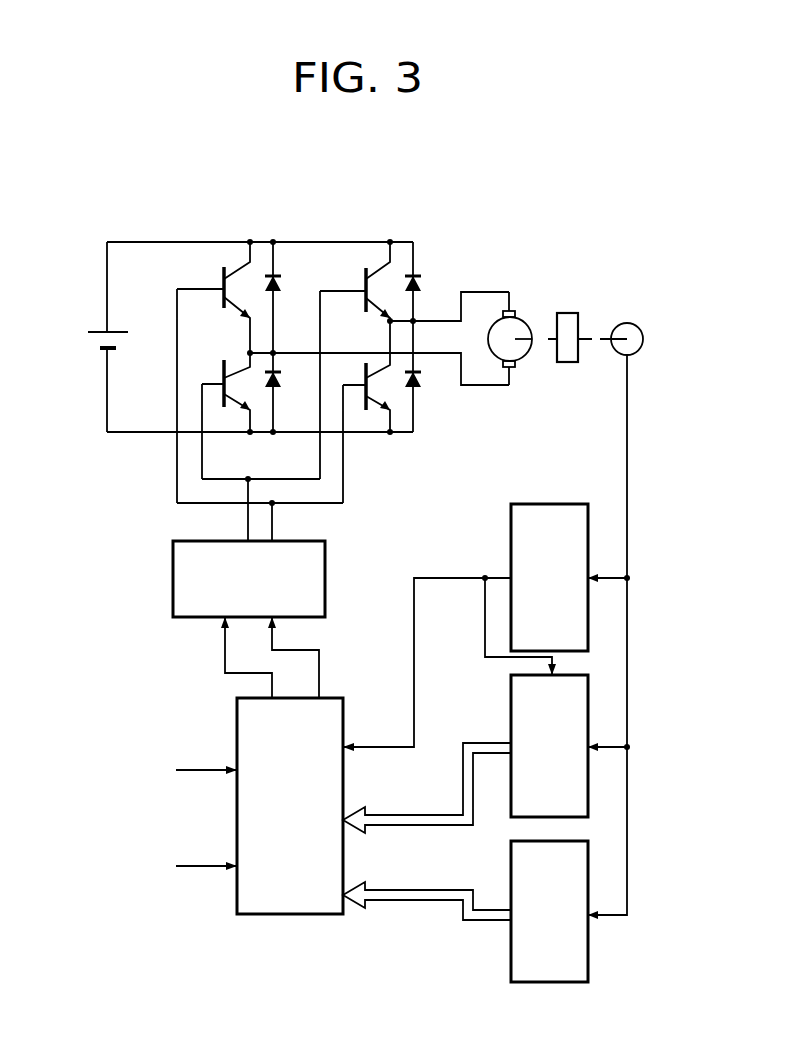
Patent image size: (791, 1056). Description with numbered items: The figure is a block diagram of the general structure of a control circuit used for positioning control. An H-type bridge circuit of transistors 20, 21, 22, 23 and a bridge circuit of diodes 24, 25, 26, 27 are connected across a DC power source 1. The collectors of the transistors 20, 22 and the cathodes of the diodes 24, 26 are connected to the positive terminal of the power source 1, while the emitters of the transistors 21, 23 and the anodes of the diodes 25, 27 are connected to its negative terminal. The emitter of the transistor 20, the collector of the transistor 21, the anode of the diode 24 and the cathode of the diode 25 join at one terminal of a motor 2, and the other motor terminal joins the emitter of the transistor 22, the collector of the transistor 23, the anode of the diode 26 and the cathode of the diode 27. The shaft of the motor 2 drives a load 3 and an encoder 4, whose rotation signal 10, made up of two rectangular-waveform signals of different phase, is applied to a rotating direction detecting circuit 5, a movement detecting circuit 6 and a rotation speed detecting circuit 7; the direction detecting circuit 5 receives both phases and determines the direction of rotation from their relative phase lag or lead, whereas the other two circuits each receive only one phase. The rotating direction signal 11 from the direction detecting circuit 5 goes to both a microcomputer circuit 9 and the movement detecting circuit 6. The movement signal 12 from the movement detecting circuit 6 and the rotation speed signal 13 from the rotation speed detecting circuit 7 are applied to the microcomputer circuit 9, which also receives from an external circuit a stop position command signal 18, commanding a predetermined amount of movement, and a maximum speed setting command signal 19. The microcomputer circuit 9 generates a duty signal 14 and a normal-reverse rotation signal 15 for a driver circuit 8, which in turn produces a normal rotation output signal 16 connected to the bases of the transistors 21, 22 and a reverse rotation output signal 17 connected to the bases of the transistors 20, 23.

The DC power source 1 is at (94, 345).
The motor 2 is at (520, 328).
The load 3 is at (568, 321).
The encoder 4 is at (627, 324).
The rotating direction detecting circuit 5 is at (511, 566).
The movement detecting circuit 6 is at (511, 722).
The rotation speed detecting circuit 7 is at (511, 970).
The driver circuit 8 is at (173, 590).
The microcomputer circuit 9 is at (281, 914).
The rotation signal 10 is at (628, 525).
The rotating direction signal 11 is at (414, 676).
The movement signal 12 is at (418, 814).
The rotation speed signal 13 is at (416, 889).
The duty signal 14 is at (319, 652).
The normal-reverse rotation signal 15 is at (225, 658).
The normal rotation output signal 16 is at (247, 524).
The reverse rotation output signal 17 is at (274, 526).
The stop position command signal 18 is at (187, 772).
The maximum speed setting command signal 19 is at (187, 865).
The transistor 20 is at (224, 279).
The transistor 21 is at (224, 383).
The transistor 22 is at (366, 283).
The transistor 23 is at (362, 382).
The diode 24 is at (277, 278).
The diode 25 is at (277, 382).
The diode 26 is at (418, 279).
The diode 27 is at (417, 382).